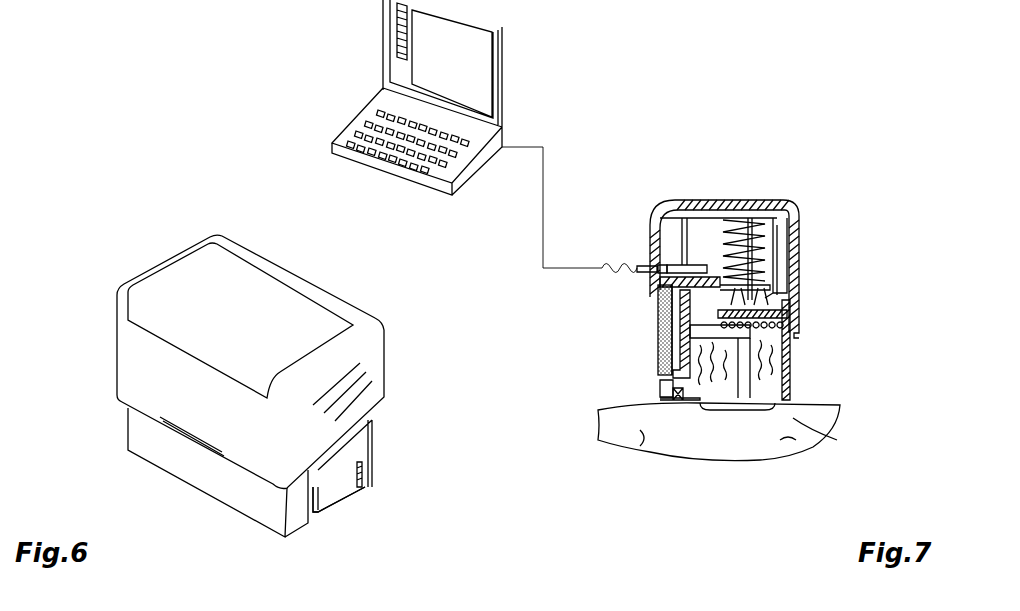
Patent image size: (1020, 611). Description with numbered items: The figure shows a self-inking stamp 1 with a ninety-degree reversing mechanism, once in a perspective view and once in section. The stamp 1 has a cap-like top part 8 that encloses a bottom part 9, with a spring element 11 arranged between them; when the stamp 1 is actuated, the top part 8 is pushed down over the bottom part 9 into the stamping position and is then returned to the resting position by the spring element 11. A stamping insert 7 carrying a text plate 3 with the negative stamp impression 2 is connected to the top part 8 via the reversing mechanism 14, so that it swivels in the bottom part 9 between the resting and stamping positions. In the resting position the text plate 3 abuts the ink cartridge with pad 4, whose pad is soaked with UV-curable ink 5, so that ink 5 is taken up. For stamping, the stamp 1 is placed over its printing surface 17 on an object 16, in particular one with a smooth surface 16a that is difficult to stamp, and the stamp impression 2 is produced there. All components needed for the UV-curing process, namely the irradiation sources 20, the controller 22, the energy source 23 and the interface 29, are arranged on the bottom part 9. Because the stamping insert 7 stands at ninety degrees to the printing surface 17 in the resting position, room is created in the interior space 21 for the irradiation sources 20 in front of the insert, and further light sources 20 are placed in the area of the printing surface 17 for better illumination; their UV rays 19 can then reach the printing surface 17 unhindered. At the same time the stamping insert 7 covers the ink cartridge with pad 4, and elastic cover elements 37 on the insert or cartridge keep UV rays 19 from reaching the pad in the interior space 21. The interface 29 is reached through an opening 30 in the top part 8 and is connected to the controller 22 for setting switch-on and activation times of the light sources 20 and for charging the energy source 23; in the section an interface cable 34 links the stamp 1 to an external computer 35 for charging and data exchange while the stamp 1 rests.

In FIG. 6, the stamp 1 is at (92, 218).
In FIG. 7, the stamp 1 is at (836, 158).
In FIG. 7, the stamp impression 2 is at (765, 410).
In FIG. 7, the text plate 3 is at (677, 312).
In FIG. 6, the ink cartridge with pad 4 is at (362, 470).
In FIG. 7, the ink cartridge with pad 4 is at (660, 347).
In FIG. 7, the UV-curable ink 5 is at (667, 356).
In FIG. 7, the stamping insert 7 is at (680, 325).
In FIG. 6, the top part 8 is at (133, 355).
In FIG. 7, the top part 8 is at (698, 212).
In FIG. 6, the bottom part 9 is at (153, 440).
In FIG. 7, the bottom part 9 is at (790, 361).
In FIG. 7, the spring element 11 is at (765, 245).
In FIG. 6, the reversing mechanism 14 is at (308, 495).
In FIG. 7, the reversing mechanism 14 is at (740, 380).
In FIG. 7, the object 16 is at (680, 393).
In FIG. 7, the smooth surface 16a is at (793, 418).
In FIG. 6, the printing surface 17 is at (330, 530).
In FIG. 7, the printing surface 17 is at (733, 428).
In FIG. 7, the UV rays 19 is at (792, 352).
In FIG. 7, the irradiation sources 20 is at (790, 320).
In FIG. 7, the interior space 21 is at (790, 358).
In FIG. 7, the controller 22 is at (799, 300).
In FIG. 7, the energy source 23 is at (670, 268).
In FIG. 7, the interface 29 is at (676, 268).
In FIG. 7, the opening 30 is at (640, 277).
In FIG. 7, the interface cable 34 is at (640, 268).
In FIG. 7, the computer 35 is at (457, 70).
In FIG. 7, the cover elements 37 is at (683, 283).